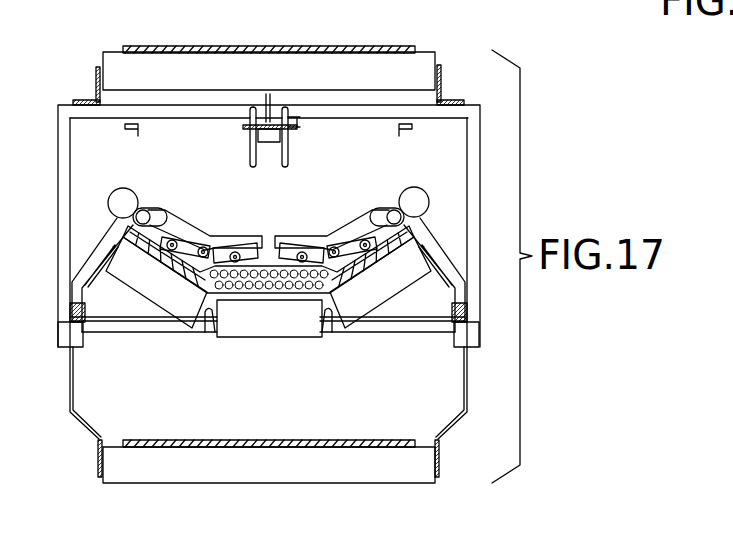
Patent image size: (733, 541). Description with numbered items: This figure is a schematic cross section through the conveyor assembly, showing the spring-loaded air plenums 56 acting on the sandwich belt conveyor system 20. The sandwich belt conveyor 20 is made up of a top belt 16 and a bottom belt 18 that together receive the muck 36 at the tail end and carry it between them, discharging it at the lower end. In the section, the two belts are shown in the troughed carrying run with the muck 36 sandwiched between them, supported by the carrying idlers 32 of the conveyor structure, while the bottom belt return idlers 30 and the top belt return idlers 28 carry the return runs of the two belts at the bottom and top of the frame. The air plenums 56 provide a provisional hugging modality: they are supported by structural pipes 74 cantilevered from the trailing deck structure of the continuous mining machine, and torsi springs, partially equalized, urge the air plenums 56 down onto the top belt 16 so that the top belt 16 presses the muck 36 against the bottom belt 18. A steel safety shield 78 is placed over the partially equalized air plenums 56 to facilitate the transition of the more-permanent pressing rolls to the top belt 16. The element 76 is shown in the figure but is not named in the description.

The top belt 16 is at (173, 47).
The bottom belt 18 is at (185, 443).
The sandwich belt conveyor system 20 is at (281, 305).
The top belt return idlers 28 is at (113, 62).
The bottom belt return idlers 30 is at (263, 455).
The carrying idlers 32 is at (355, 330).
The muck 36 is at (253, 300).
The air plenums 56 is at (172, 212).
The structural pipes 74 is at (415, 187).
The pivot arm 76 is at (390, 203).
The steel safety shield 78 is at (190, 215).